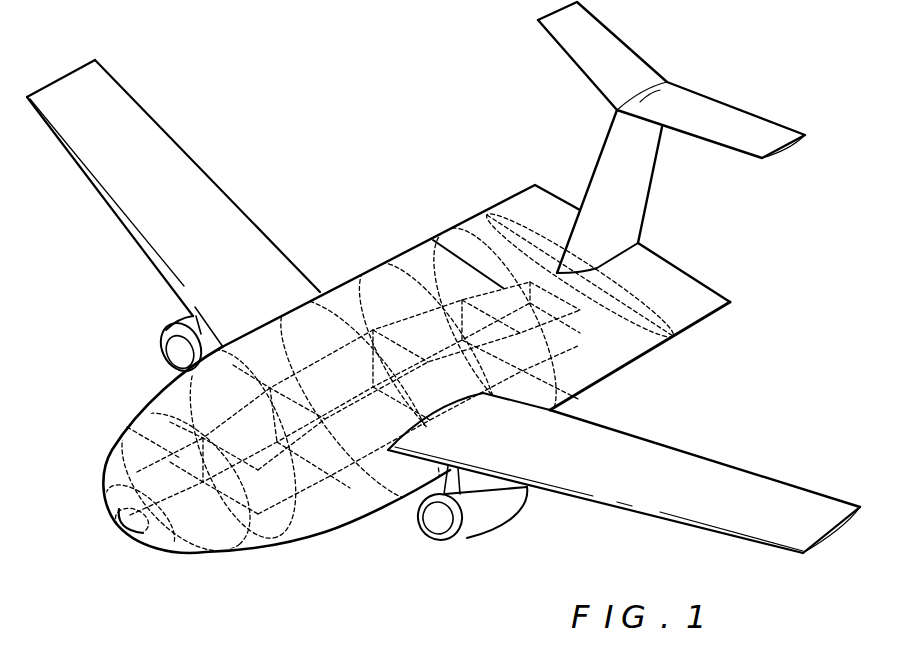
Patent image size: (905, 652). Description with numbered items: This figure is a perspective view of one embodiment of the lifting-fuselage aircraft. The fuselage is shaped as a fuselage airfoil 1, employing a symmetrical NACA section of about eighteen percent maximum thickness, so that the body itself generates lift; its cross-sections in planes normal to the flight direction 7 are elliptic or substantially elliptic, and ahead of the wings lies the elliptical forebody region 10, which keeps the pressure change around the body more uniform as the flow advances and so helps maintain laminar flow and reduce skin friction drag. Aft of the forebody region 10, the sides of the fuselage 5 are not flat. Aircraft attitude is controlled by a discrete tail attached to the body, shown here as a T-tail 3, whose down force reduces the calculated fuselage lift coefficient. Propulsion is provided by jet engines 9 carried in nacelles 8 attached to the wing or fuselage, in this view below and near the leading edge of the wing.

The fuselage airfoil 1 is at (530, 202).
The T-tail 3 is at (614, 110).
The fuselage 5 is at (302, 537).
The flight direction 7 is at (370, 500).
The nacelle 8 is at (478, 518).
The jet engine 9 is at (172, 357).
The elliptical forebody region 10 is at (609, 374).